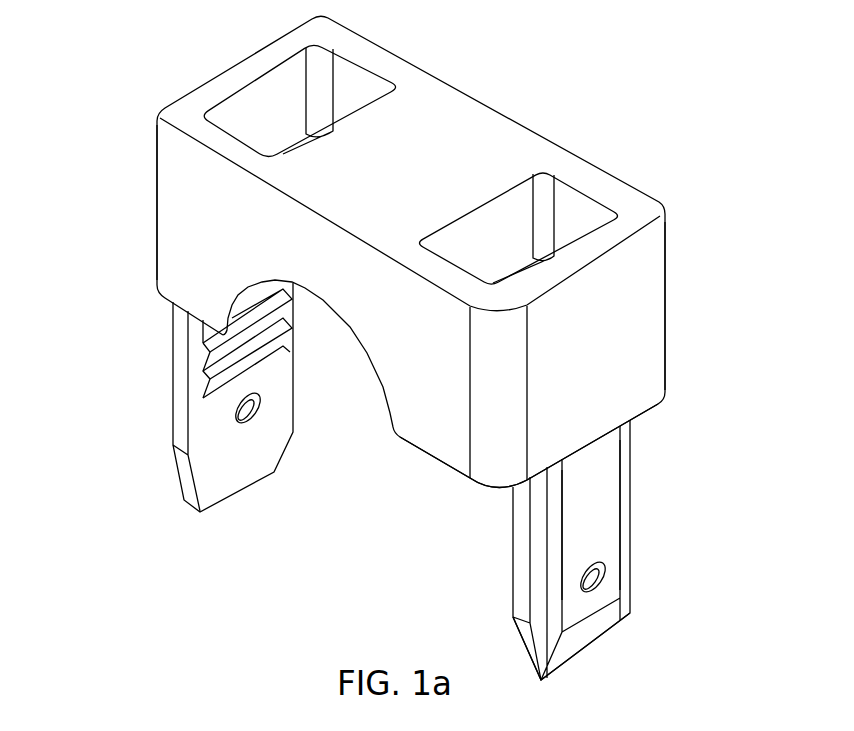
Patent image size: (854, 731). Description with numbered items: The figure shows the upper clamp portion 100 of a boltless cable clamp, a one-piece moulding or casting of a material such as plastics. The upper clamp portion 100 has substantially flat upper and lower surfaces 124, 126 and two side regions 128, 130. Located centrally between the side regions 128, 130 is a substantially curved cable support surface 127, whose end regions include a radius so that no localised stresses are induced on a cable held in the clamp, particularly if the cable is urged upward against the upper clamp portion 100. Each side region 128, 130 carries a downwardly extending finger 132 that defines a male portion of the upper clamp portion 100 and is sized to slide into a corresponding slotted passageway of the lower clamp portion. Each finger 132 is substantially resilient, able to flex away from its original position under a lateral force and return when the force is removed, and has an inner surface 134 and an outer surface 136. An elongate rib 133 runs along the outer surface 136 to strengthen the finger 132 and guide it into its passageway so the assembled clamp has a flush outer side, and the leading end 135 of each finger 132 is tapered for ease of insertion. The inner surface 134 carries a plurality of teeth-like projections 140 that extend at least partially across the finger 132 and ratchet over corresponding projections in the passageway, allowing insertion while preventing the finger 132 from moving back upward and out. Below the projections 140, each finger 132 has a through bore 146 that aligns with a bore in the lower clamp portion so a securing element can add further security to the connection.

The upper clamp portion 100 is at (668, 88).
The upper surface 124 is at (322, 25).
The lower surface 126 is at (437, 465).
The cable support surface 127 is at (390, 417).
The side region 128 is at (124, 187).
The side region 130 is at (678, 297).
The finger 132 is at (613, 553).
The elongate rib 133 is at (583, 493).
The inner surface 134 is at (194, 414).
The leading end 135 is at (582, 643).
The outer surface 136 is at (613, 557).
The teeth-like projections 140 is at (212, 358).
The through bore 146 is at (232, 413).